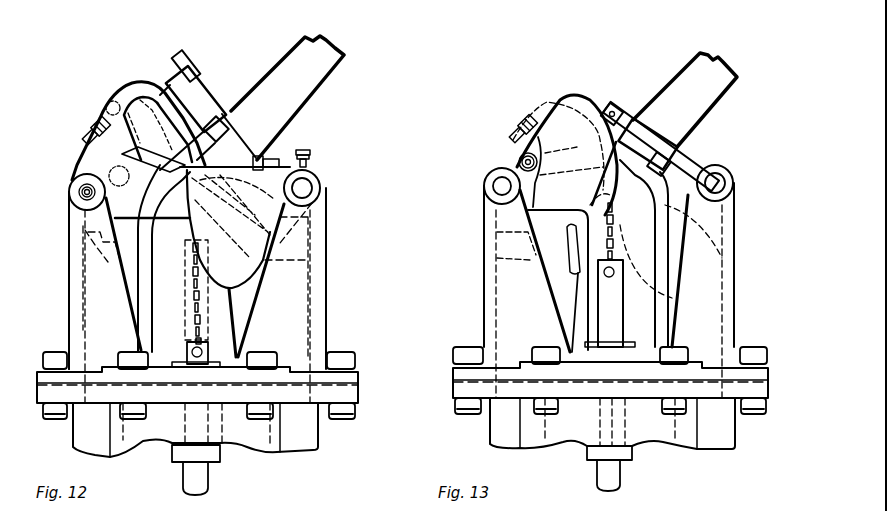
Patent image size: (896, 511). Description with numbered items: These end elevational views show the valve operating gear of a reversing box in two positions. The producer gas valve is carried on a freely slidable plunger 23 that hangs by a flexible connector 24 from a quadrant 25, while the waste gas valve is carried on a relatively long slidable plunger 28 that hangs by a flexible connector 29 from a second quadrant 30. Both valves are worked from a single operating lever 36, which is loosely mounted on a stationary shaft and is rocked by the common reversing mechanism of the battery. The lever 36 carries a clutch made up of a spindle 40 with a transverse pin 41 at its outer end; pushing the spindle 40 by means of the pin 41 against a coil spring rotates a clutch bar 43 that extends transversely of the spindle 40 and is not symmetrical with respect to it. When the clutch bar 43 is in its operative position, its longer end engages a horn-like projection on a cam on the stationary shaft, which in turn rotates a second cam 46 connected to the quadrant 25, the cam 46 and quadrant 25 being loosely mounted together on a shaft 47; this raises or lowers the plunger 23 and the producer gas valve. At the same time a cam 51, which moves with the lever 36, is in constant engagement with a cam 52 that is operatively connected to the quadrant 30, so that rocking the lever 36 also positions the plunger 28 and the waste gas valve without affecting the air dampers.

In FIG. 12, the slidable plunger 23 is at (210, 490).
In FIG. 13, the slidable plunger 23 is at (622, 488).
In FIG. 12, the flexible connector 24 is at (244, 336).
In FIG. 13, the flexible connector 24 is at (614, 248).
In FIG. 12, the quadrant 25 is at (262, 286).
In FIG. 13, the quadrant 25 is at (556, 102).
In FIG. 12, the slidable plunger 28 is at (140, 325).
In FIG. 12, the flexible connector 29 is at (142, 82).
In FIG. 12, the quadrant 30 is at (126, 79).
In FIG. 13, the quadrant 30 is at (715, 250).
In FIG. 12, the operating lever 36 is at (310, 82).
In FIG. 13, the operating lever 36 is at (715, 92).
In FIG. 12, the spindle 40 is at (197, 104).
In FIG. 13, the spindle 40 is at (700, 212).
In FIG. 12, the transverse pin 41 is at (189, 66).
In FIG. 13, the transverse pin 41 is at (730, 185).
In FIG. 12, the clutch bar 43 is at (222, 112).
In FIG. 13, the clutch bar 43 is at (495, 230).
In FIG. 13, the cam 46 is at (540, 158).
In FIG. 12, the shaft 47 is at (310, 191).
In FIG. 13, the shaft 47 is at (500, 187).
In FIG. 12, the cam 51 is at (138, 163).
In FIG. 12, the cam 52 is at (88, 168).